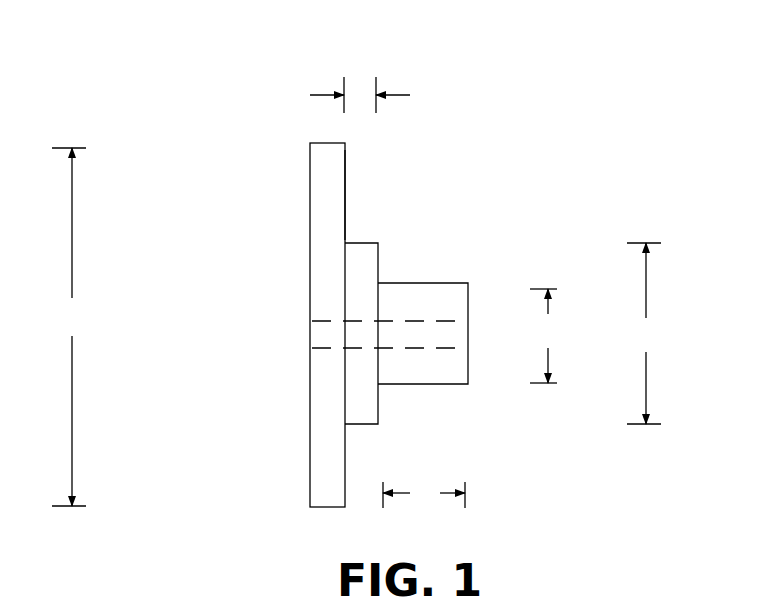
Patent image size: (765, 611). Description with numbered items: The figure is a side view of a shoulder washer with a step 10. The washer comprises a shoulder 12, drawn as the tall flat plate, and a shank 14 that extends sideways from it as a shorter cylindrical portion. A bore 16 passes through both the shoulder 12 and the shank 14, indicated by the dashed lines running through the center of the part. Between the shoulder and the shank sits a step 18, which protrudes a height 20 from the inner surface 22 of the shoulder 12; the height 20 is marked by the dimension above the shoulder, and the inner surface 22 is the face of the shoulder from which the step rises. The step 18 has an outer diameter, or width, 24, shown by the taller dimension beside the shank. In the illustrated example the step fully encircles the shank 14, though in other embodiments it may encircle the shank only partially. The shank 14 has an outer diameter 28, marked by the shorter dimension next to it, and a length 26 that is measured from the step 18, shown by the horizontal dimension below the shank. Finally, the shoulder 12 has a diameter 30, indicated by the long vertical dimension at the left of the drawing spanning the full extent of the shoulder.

The shoulder washer with a step 10 is at (247, 48).
The shoulder 12 is at (262, 243).
The shank 14 is at (453, 240).
The bore 16 is at (278, 326).
The step 18 is at (358, 427).
The height 20 is at (360, 95).
The inner surface 22 is at (346, 226).
The outer diameter 24 is at (644, 333).
The length 26 is at (424, 495).
The outer diameter 28 is at (544, 336).
The diameter 30 is at (69, 327).